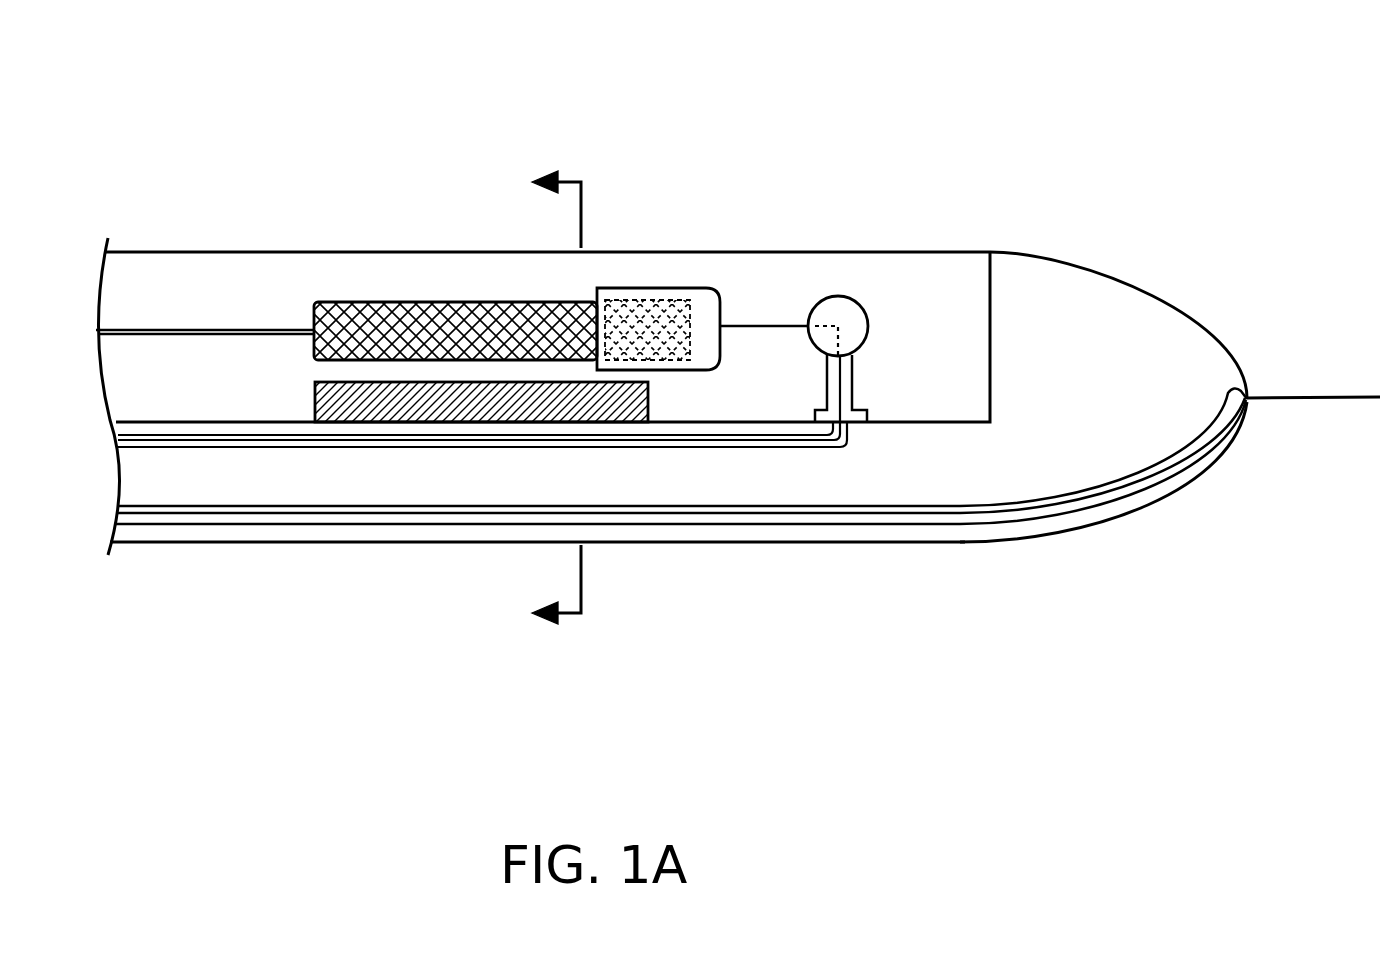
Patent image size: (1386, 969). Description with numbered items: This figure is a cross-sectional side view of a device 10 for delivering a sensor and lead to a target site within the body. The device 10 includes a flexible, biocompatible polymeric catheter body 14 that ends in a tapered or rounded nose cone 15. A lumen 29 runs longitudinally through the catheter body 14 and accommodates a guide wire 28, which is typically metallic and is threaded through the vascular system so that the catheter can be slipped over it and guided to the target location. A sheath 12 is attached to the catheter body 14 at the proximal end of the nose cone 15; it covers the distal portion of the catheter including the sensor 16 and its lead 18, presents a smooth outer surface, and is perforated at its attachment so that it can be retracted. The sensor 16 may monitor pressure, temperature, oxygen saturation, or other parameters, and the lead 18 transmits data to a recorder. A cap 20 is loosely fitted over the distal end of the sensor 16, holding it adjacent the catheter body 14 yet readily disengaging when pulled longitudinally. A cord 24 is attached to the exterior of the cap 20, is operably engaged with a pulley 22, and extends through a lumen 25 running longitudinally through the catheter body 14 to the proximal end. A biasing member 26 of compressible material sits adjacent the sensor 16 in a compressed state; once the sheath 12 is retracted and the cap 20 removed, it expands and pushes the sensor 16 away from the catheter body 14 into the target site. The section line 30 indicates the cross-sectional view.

The device 10 is at (458, 97).
The sheath 12 is at (627, 252).
The catheter body 14 is at (843, 482).
The nose cone 15 is at (1112, 305).
The sensor 16 is at (430, 300).
The lead 18 is at (178, 328).
The cap 20 is at (690, 288).
The pulley 22 is at (845, 298).
The cord 24 is at (717, 450).
The lumen 25 is at (810, 447).
The biasing member 26 is at (485, 425).
The guide wire 28 is at (1313, 400).
The lumen 29 is at (1040, 518).
The section line 30 is at (556, 401).